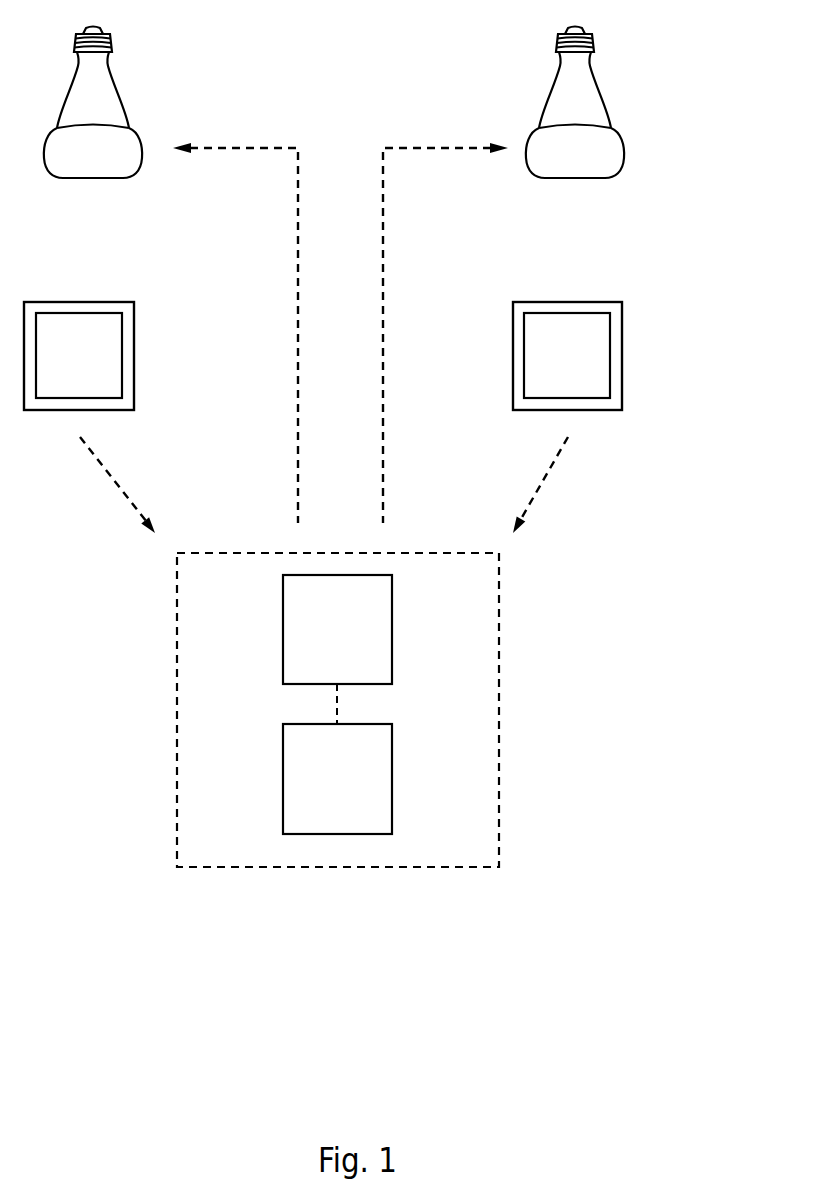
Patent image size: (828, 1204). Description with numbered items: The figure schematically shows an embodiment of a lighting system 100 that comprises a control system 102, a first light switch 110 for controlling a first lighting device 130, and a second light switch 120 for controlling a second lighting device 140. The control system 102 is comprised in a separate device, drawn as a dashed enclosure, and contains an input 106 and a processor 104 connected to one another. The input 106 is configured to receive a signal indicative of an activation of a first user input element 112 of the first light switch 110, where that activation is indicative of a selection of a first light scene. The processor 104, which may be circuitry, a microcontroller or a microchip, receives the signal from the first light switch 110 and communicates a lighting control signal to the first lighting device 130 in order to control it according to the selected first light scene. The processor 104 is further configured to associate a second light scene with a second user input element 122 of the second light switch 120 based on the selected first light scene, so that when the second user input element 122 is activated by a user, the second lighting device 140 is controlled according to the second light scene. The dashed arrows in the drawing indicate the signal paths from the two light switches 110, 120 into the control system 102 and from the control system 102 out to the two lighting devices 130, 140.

The lighting system 100 is at (376, 1007).
The control system 102 is at (499, 846).
The processor 104 is at (347, 777).
The input 106 is at (347, 627).
The first light switch 110 is at (134, 397).
The first user input element 112 is at (95, 345).
The second light switch 120 is at (513, 397).
The second user input element 122 is at (547, 343).
The first lighting device 130 is at (103, 90).
The second lighting device 140 is at (578, 90).